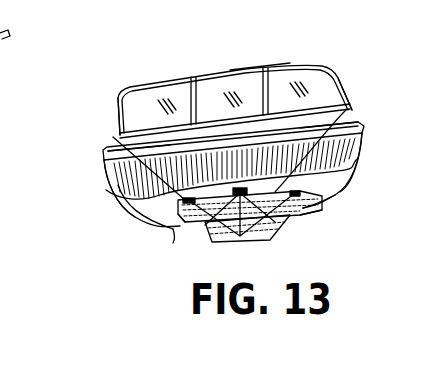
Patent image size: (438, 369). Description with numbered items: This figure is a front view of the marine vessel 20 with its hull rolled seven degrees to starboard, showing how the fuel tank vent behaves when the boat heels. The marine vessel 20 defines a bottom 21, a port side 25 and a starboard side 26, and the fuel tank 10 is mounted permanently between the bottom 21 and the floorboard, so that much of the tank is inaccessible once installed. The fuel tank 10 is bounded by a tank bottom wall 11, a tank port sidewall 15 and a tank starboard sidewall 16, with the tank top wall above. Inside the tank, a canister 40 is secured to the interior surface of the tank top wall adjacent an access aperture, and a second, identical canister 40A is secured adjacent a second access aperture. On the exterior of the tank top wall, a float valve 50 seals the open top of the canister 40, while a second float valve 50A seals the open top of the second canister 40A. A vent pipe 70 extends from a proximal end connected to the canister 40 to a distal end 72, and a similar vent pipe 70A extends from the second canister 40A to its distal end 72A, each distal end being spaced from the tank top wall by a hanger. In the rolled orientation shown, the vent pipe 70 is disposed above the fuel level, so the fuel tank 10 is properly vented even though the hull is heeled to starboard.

The fuel tank 10 is at (313, 197).
The tank bottom wall 11 is at (242, 233).
The tank port sidewall 15 is at (310, 205).
The tank starboard sidewall 16 is at (197, 214).
The marine vessel 20 is at (238, 192).
The bottom 21 is at (180, 232).
The port side 25 is at (352, 173).
The starboard side 26 is at (115, 192).
The canister 40 is at (282, 230).
The second canister 40A is at (186, 231).
The float valve 50 is at (242, 192).
The second float valve 50A is at (219, 194).
The vent pipe 70 is at (352, 122).
The vent pipe 70A is at (122, 154).
The distal end 72 is at (305, 182).
The distal end 72A is at (180, 203).